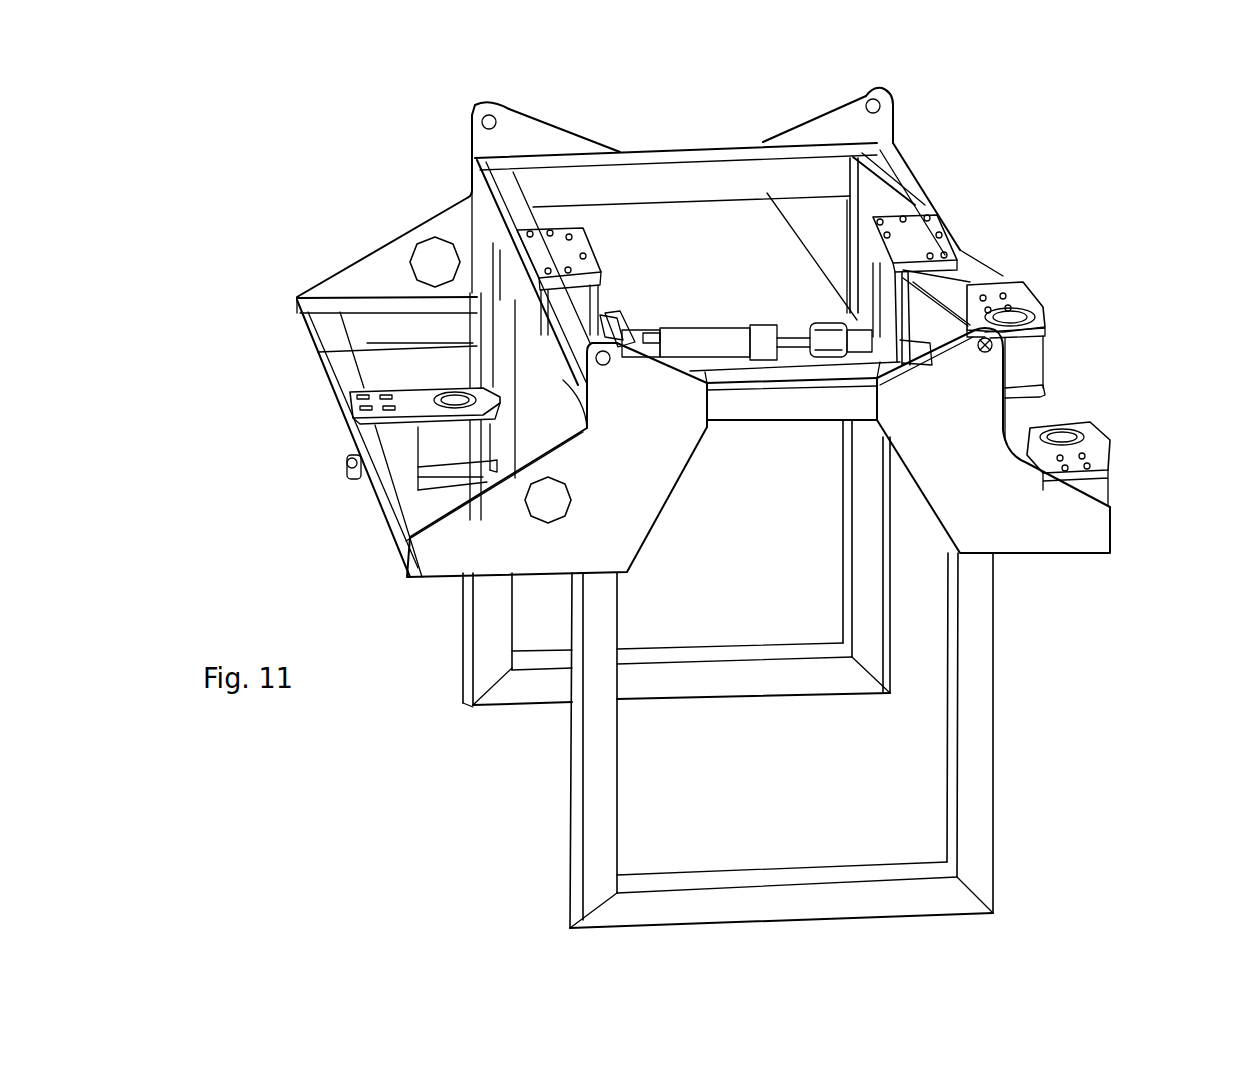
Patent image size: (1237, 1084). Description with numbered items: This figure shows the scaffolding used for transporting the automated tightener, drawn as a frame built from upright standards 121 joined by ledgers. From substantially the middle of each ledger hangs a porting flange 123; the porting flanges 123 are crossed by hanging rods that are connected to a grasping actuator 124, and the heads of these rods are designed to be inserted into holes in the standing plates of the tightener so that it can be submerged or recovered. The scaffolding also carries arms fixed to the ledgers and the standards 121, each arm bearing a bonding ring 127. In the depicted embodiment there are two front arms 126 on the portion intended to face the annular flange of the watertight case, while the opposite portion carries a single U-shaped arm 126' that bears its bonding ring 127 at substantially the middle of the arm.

The standard 121 is at (983, 757).
The porting flange 123 is at (595, 302).
The grasping actuator 124 is at (700, 337).
The front arm 126 is at (767, 375).
The U-shaped arm 126' is at (372, 245).
The bonding ring 127 is at (450, 448).